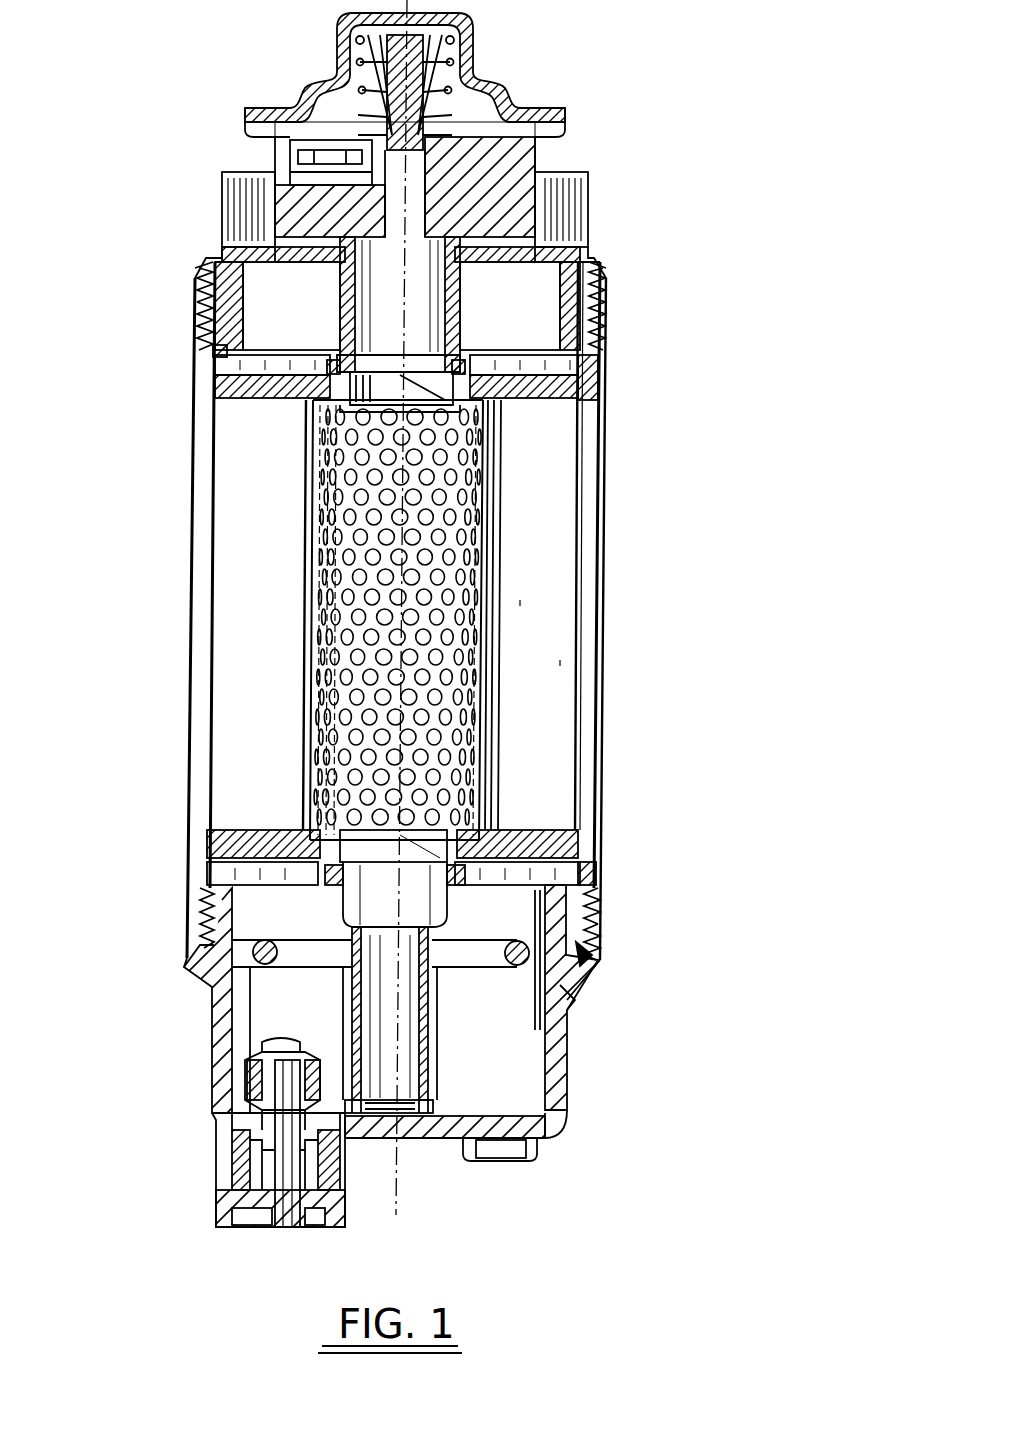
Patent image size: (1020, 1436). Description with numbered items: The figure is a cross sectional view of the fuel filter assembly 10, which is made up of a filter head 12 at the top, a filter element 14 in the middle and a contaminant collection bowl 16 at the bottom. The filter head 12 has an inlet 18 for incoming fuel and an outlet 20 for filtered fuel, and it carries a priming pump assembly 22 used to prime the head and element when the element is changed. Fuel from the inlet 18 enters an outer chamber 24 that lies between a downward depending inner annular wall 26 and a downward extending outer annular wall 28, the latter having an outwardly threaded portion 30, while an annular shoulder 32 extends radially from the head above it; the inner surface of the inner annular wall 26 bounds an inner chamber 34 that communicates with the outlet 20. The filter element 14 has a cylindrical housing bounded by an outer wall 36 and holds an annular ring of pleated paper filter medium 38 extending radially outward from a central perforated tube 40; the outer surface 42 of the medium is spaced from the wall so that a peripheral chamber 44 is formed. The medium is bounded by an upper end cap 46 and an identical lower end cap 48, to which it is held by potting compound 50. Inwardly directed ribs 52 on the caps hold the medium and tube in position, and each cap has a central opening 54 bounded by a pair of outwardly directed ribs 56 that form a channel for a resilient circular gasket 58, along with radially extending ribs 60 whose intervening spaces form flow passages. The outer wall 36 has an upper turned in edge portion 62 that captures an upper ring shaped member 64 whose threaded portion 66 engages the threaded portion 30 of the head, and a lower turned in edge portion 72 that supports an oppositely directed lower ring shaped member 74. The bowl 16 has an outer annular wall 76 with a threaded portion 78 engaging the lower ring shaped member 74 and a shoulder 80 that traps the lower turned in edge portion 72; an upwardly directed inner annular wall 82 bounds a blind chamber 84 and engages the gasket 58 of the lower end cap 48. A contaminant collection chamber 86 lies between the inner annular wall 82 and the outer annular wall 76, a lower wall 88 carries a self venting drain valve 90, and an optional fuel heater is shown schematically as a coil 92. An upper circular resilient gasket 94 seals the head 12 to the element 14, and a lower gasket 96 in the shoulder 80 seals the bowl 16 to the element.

The fuel filter assembly 10 is at (812, 647).
The filter head 12 is at (614, 92).
The filter element 14 is at (700, 636).
The contaminant collection bowl 16 is at (658, 1082).
The inlet 18 is at (222, 193).
The outlet 20 is at (585, 190).
The priming pump assembly 22 is at (468, 42).
The outer chamber 24 is at (450, 306).
The inner annular wall 26 is at (586, 251).
The outer annular wall 28 is at (606, 322).
The threaded portion 30 is at (228, 308).
The annular shoulder 32 is at (612, 288).
The inner chamber 34 is at (398, 335).
The outer wall 36 is at (600, 513).
The filter medium 38 is at (527, 723).
The perforated tube 40 is at (440, 478).
The outer surface 42 is at (578, 588).
The peripheral chamber 44 is at (585, 676).
The upper end cap 46 is at (450, 413).
The lower end cap 48 is at (575, 845).
The potting compound 50 is at (540, 833).
The inwardly directed ribs 52 is at (212, 395).
The central opening 54 is at (470, 440).
The outwardly directed ribs 56 is at (390, 358).
The resilient circular gasket 58 is at (192, 940).
The radially extending ribs 60 is at (585, 363).
The upper turned in edge portion 62 is at (197, 296).
The upper ring shaped member 64 is at (213, 330).
The threaded portion 66 is at (214, 357).
The lower turned in edge portion 72 is at (592, 948).
The lower ring shaped member 74 is at (595, 932).
The outer annular wall 76 is at (563, 1062).
The threaded portion 78 is at (575, 992).
The shoulder 80 is at (597, 978).
The inner annular wall 82 is at (397, 878).
The blind chamber 84 is at (398, 1068).
The contaminant collection chamber 86 is at (565, 1120).
The lower wall 88 is at (437, 1142).
The drain valve 90 is at (345, 1215).
The coil 92 is at (379, 1040).
The upper circular resilient gasket 94 is at (205, 275).
The lower gasket 96 is at (185, 967).